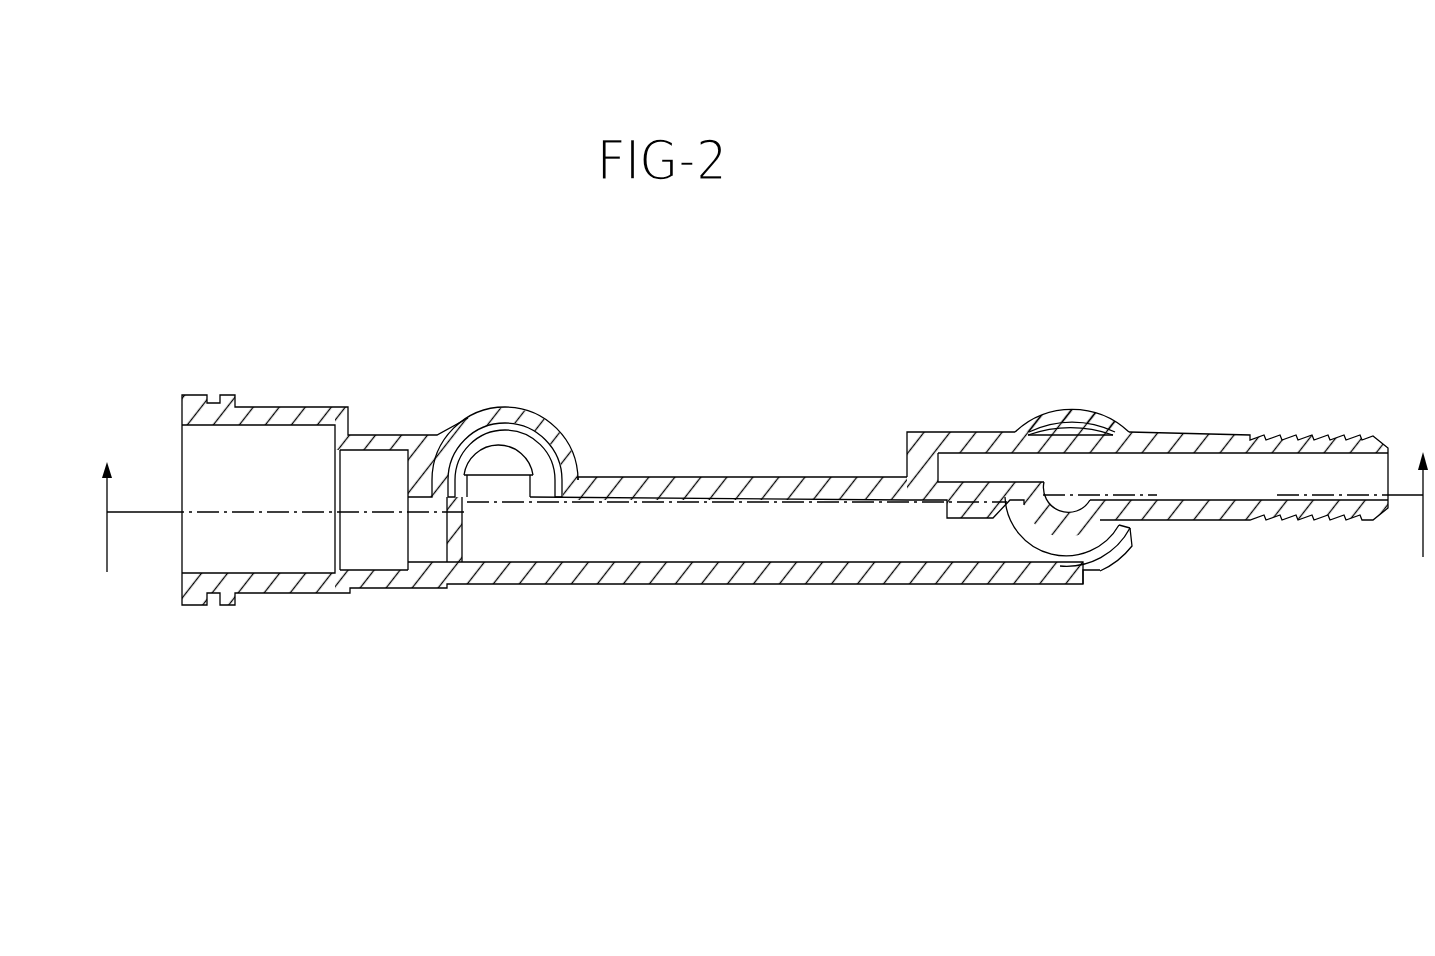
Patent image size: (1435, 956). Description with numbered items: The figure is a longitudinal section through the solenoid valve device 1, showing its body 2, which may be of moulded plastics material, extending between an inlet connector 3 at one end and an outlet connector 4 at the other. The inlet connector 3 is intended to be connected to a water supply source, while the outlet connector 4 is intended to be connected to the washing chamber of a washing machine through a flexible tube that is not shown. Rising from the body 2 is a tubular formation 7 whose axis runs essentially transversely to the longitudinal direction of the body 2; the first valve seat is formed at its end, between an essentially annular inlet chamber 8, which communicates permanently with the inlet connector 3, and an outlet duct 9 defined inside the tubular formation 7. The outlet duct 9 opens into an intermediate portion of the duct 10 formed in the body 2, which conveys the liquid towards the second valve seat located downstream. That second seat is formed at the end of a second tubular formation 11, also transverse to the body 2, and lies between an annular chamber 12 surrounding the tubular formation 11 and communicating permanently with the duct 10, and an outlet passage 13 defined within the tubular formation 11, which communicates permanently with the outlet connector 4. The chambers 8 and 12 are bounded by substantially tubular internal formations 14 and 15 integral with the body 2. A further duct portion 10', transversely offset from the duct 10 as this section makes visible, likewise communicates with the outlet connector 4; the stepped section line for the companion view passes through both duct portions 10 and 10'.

The solenoid valve device 1 is at (1052, 198).
The body 2 is at (702, 468).
The inlet connector 3 is at (231, 430).
The outlet connector 4 is at (1328, 458).
The tubular formation 7 is at (513, 455).
The inlet chamber 8 is at (457, 454).
The outlet duct 9 is at (513, 456).
The duct 10 is at (717, 573).
The duct portion 10' is at (1163, 424).
The tubular formation 11 is at (1103, 560).
The annular chamber 12 is at (1125, 545).
The outlet passage or duct 13 is at (1080, 513).
The internal formation 14 is at (484, 414).
The internal formation 15 is at (1076, 409).